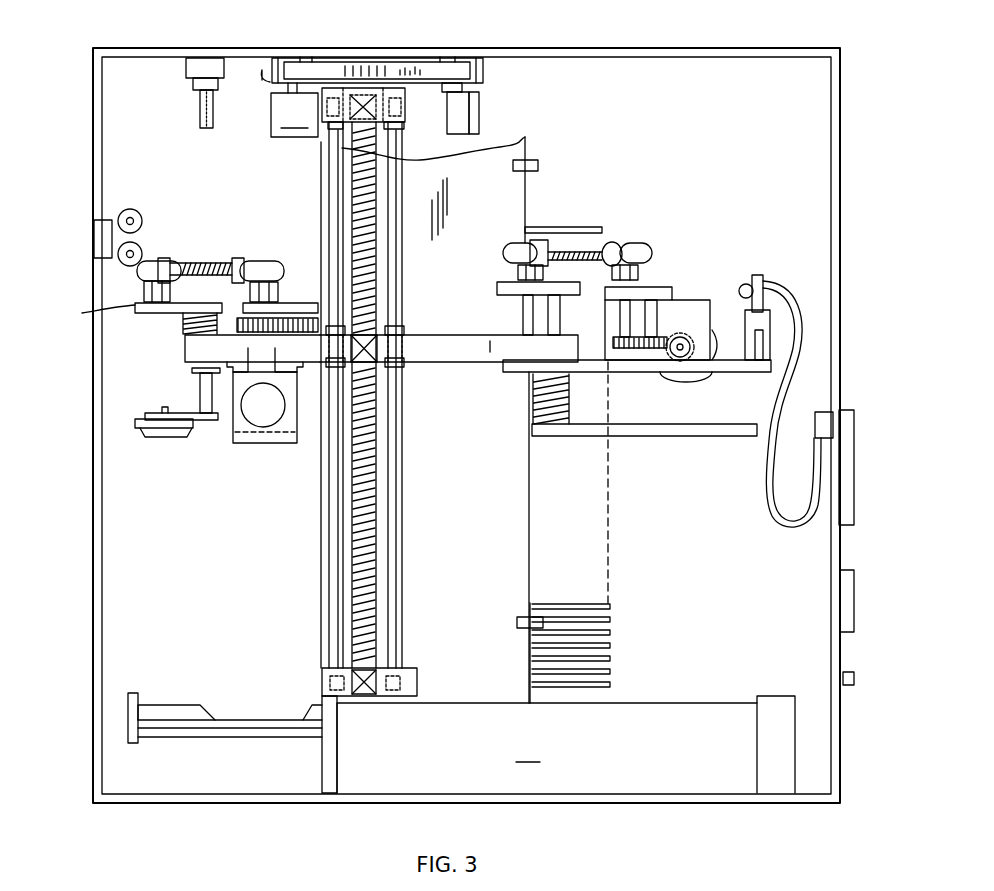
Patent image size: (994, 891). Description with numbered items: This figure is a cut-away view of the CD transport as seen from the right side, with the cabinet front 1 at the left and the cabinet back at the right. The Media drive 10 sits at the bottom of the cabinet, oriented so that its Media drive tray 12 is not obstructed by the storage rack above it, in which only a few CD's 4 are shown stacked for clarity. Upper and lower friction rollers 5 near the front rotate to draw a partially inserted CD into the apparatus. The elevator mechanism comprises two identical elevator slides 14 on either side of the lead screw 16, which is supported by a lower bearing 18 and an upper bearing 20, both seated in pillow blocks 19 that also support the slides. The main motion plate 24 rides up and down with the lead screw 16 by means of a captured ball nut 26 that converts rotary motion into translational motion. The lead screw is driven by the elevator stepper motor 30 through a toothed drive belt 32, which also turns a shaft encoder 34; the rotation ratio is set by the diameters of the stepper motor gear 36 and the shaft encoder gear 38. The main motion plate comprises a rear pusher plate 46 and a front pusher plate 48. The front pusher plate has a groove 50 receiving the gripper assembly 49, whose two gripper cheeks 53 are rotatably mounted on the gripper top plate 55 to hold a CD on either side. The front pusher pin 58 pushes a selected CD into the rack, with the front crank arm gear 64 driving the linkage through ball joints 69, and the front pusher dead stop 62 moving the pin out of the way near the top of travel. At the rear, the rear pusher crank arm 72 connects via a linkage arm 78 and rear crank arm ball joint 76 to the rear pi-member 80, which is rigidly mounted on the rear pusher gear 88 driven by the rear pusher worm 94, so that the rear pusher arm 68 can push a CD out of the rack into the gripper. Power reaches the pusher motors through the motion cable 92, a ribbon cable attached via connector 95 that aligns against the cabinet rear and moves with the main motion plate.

The cabinet front 1 is at (80, 86).
The CD's 4 is at (610, 650).
The friction rollers 5 is at (142, 250).
The Media drive 10 is at (566, 744).
The Media drive tray 12 is at (272, 719).
The elevator slides 14 is at (332, 546).
The lead screw 16 is at (352, 496).
The lower bearing 18 is at (355, 675).
The pillow blocks 19 is at (395, 110).
The upper bearing 20 is at (378, 123).
The main motion plate 24 is at (452, 335).
The captured ball nut 26 is at (378, 322).
The elevator stepper motor 30 is at (294, 115).
The toothed drive belt 32 is at (330, 57).
The shaft encoder 34 is at (481, 113).
The stepper motor gear 36 is at (262, 70).
The shaft encoder gear 38 is at (478, 90).
The rear pusher plate 46 is at (743, 372).
The front pusher plate 48 is at (183, 348).
The gripper assembly 49 is at (259, 458).
The groove 50 is at (228, 358).
The gripper cheeks 53 is at (286, 440).
The gripper top plate 55 is at (198, 422).
The front pusher pin 58 is at (172, 440).
The front pusher dead stop 62 is at (198, 103).
The front crank arm gear 64 is at (226, 264).
The rear pusher arm 68 is at (672, 438).
The ball joints 69 is at (163, 264).
The rear pusher crank arm 72 is at (512, 296).
The rear crank arm ball joint 76 is at (515, 242).
The linkage arm 78 is at (574, 250).
The rear pi-member 80 is at (655, 286).
The rear pusher gear 88 is at (612, 340).
The motion cable 92 is at (800, 516).
The rear pusher worm 94 is at (687, 342).
The connector 95 is at (744, 308).